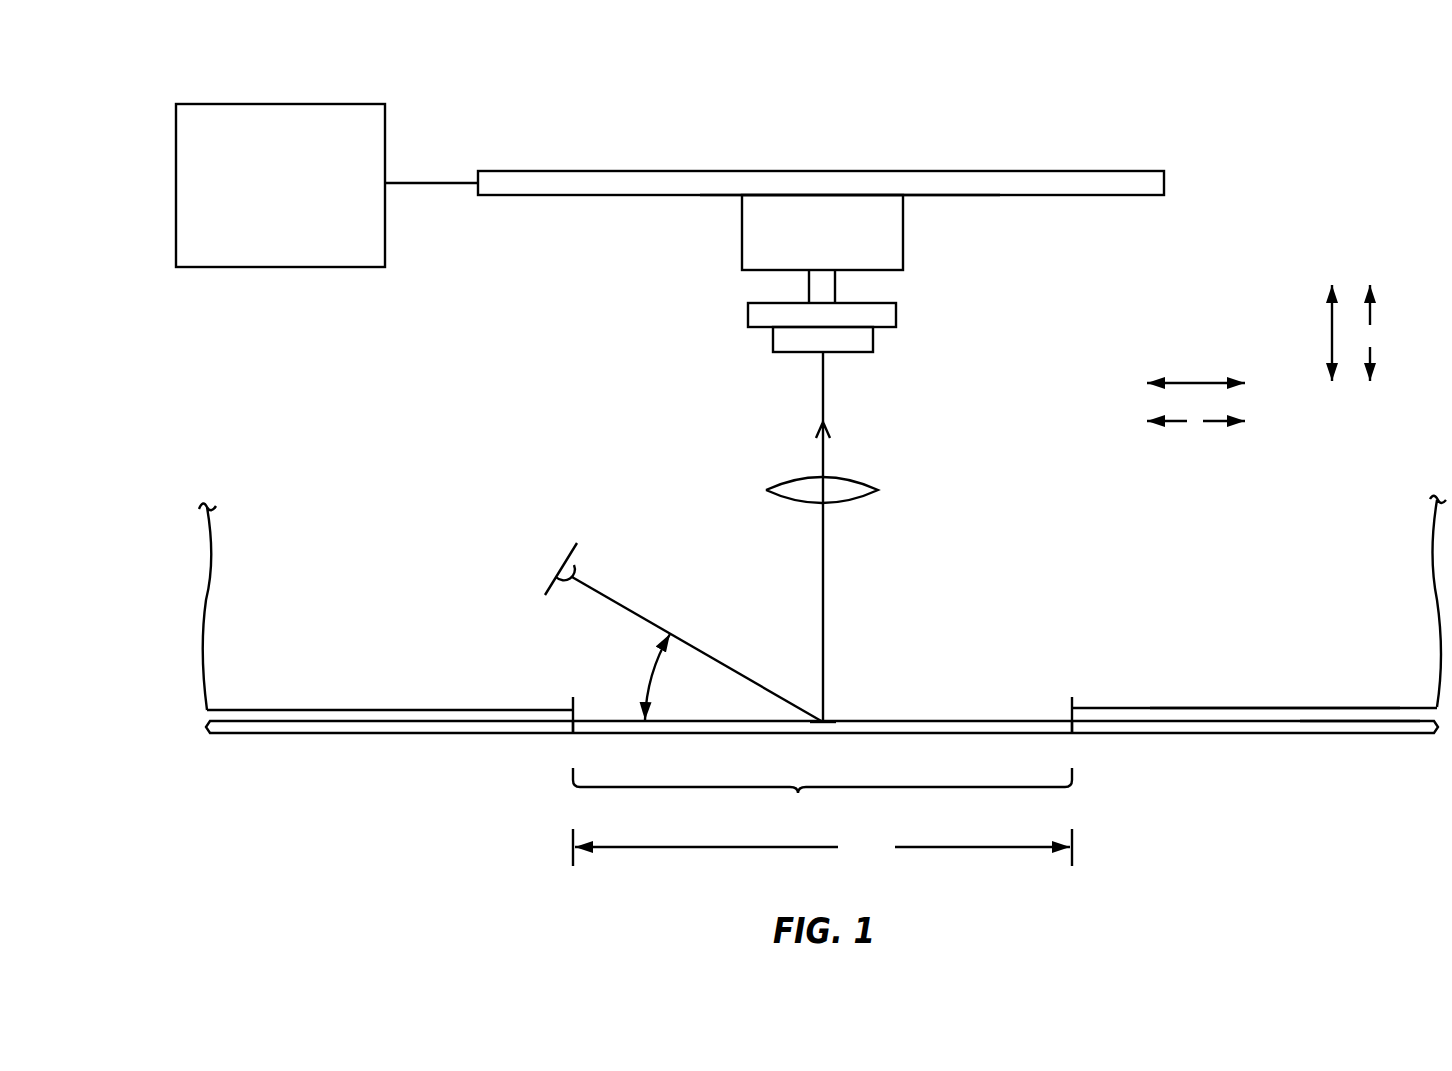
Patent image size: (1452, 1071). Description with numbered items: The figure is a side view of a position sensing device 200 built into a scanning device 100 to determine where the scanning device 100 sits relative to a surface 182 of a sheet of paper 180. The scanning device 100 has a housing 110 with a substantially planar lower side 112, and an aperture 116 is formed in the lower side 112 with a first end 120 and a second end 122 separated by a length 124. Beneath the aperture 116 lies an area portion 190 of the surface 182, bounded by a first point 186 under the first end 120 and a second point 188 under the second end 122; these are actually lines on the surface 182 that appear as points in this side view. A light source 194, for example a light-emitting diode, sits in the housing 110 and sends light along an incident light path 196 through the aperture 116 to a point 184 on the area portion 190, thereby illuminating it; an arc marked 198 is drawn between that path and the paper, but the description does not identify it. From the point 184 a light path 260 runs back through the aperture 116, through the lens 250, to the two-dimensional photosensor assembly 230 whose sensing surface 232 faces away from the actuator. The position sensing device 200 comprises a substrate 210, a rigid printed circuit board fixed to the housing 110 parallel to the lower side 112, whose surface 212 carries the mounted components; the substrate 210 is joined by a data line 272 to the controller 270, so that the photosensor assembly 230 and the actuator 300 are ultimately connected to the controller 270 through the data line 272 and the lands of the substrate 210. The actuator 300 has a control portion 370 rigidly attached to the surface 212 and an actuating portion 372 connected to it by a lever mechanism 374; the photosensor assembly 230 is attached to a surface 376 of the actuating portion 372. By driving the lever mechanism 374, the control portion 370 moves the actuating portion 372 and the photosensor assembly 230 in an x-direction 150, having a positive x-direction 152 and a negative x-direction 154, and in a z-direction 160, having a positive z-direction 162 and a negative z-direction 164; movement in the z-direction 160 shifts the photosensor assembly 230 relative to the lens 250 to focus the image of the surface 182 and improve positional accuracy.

The scanning device 100 is at (1296, 103).
The housing 110 is at (201, 592).
The lower side 112 is at (1255, 706).
The aperture 116 is at (932, 694).
The first end 120 is at (572, 698).
The second end 122 is at (1075, 698).
The length 124 is at (822, 847).
The x-direction 150 is at (1194, 380).
The positive x-direction 152 is at (1215, 425).
The negative x-direction 154 is at (1177, 425).
The z-direction 160 is at (1330, 328).
The positive z-direction 162 is at (1372, 315).
The negative z-direction 164 is at (1372, 348).
The sheet of paper 180 is at (1330, 738).
The surface 182 is at (1352, 720).
The point 184 is at (825, 734).
The first point 186 is at (572, 735).
The second point 188 is at (1073, 735).
The area portion 190 is at (822, 800).
The light source 194 is at (576, 566).
The incident light path 196 is at (697, 648).
The reflection angle 198 is at (655, 673).
The position sensing device 200 is at (997, 145).
The substrate 210 is at (1166, 180).
The surface 212 is at (1087, 196).
The two-dimensional photosensor assembly 230 is at (768, 349).
The surface 232 is at (860, 358).
The lens 250 is at (850, 500).
The light path 260 is at (822, 578).
The controller 270 is at (282, 268).
The data line 272 is at (432, 178).
The actuator 300 is at (738, 245).
The control portion 370 is at (905, 231).
The actuating portion 372 is at (897, 310).
The lever mechanism 374 is at (836, 283).
The surface 376 is at (885, 328).